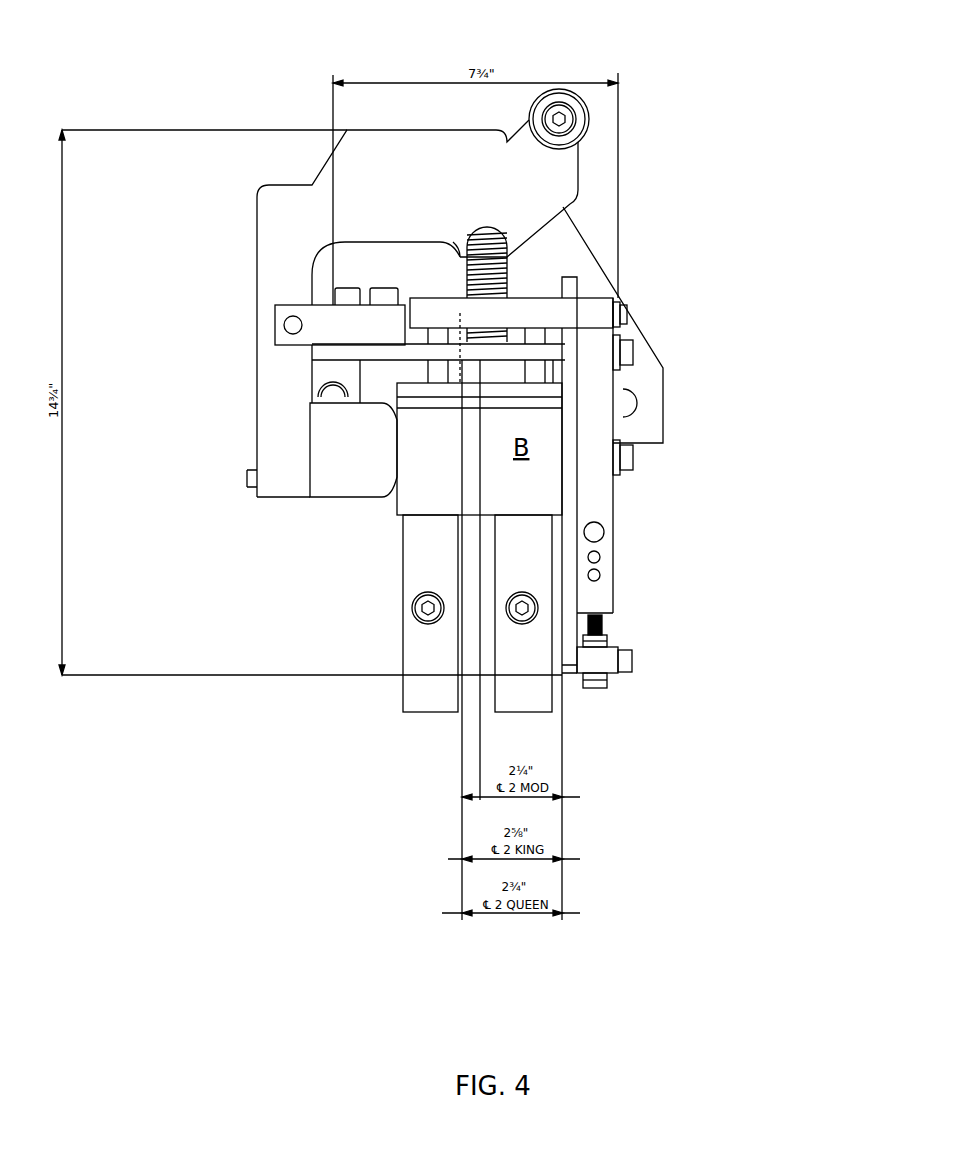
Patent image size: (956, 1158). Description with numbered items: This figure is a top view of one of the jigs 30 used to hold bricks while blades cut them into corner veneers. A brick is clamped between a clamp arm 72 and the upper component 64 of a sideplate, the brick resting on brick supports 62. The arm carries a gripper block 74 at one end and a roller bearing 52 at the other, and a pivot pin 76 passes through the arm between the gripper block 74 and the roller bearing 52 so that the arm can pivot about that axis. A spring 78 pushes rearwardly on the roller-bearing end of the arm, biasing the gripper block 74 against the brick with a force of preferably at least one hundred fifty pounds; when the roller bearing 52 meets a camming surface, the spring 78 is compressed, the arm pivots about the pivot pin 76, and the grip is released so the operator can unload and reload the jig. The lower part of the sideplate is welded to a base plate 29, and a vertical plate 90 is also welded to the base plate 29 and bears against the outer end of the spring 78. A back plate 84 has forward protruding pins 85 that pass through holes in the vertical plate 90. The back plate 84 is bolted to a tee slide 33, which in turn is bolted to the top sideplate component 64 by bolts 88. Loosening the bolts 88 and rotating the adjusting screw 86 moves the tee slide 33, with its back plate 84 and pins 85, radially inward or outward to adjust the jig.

The base plate 29 is at (648, 398).
The jig 30 is at (260, 653).
The tee slide 33 is at (605, 522).
The roller bearing 52 is at (557, 90).
The brick supports 62 is at (427, 693).
The upper component of sideplate 64 is at (570, 517).
The clamp arm 72 is at (273, 418).
The gripper block 74 is at (353, 450).
The pivot pin 76 is at (290, 323).
The spring 78 is at (487, 265).
The back plate 84 is at (538, 305).
The pins 85 is at (535, 338).
The adjusting screw 86 is at (603, 622).
The bolts 88 is at (628, 355).
The vertical plate 90 is at (350, 353).